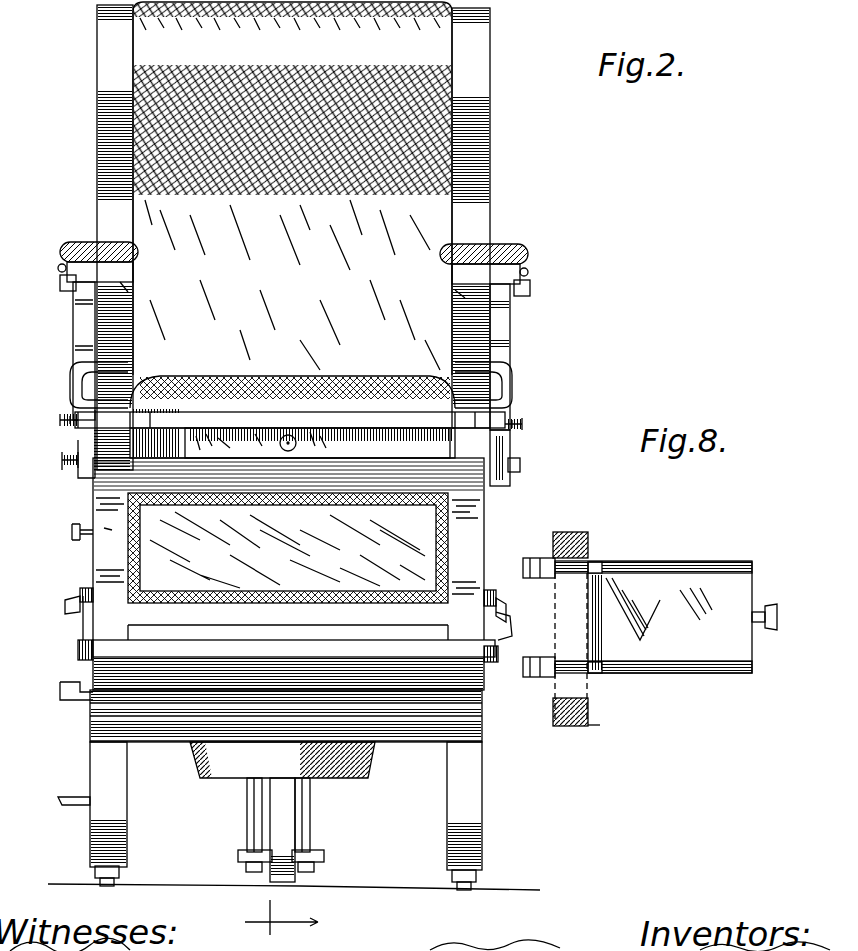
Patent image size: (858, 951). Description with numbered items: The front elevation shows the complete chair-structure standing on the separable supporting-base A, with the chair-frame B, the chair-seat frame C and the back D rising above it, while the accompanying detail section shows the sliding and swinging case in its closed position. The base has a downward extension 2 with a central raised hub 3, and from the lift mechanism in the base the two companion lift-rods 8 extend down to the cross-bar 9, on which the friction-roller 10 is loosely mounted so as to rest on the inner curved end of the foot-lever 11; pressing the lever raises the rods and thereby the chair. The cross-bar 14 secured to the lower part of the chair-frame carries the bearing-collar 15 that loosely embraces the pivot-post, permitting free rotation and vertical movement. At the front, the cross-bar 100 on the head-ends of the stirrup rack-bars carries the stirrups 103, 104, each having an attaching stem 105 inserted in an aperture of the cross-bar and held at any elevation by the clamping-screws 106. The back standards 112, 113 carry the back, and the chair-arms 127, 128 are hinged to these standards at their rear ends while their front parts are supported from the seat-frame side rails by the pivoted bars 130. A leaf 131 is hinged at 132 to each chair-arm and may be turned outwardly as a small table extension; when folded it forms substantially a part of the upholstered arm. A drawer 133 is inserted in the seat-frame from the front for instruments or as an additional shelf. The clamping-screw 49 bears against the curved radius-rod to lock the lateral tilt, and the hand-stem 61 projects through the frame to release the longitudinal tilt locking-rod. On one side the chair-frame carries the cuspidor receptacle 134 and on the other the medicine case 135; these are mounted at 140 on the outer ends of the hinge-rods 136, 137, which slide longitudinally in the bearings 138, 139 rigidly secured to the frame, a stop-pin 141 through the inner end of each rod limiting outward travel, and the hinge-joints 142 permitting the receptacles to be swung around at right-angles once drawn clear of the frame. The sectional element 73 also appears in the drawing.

In FIG. 2, the back D is at (292, 188).
In FIG. 2, the back standard 112 is at (95, 148).
In FIG. 2, the back standard 113 is at (500, 152).
In FIG. 2, the leaf 131 is at (85, 268).
In FIG. 2, the hinge 132 is at (58, 270).
In FIG. 2, the chair-arm 127 is at (125, 288).
In FIG. 2, the chair-arm 128 is at (462, 294).
In FIG. 2, the bar 130 is at (510, 330).
In FIG. 2, the stirrup 103 is at (80, 372).
In FIG. 2, the stirrup 104 is at (495, 375).
In FIG. 2, the cross-bar 100 is at (125, 418).
In FIG. 2, the clamping-screw 106 is at (58, 420).
In FIG. 2, the attaching stem 105 is at (510, 452).
In FIG. 2, the clamping-screw 49 is at (60, 462).
In FIG. 2, the chair-seat frame C is at (292, 433).
In FIG. 2, the drawer 133 is at (317, 443).
In FIG. 2, the frame 73 is at (95, 322).
In FIG. 2, the bearing-collar 15 is at (109, 523).
In FIG. 2, the hand-stem 61 is at (70, 532).
In FIG. 2, the hinge-rod 136 is at (78, 592).
In FIG. 8, the hinge-rod 136 is at (726, 550).
In FIG. 2, the cuspidor receptacle 134 is at (92, 628).
In FIG. 2, the hinge-rod 137 is at (76, 650).
In FIG. 8, the hinge-rod 137 is at (718, 665).
In FIG. 2, the medicine case 135 is at (525, 630).
In FIG. 8, the medicine case 135 is at (653, 642).
In FIG. 2, the cross-bar 14 is at (286, 716).
In FIG. 2, the supporting-base A is at (294, 800).
In FIG. 2, the downward extension 2 is at (282, 760).
In FIG. 2, the lift-rod 8 is at (246, 798).
In FIG. 2, the foot-lever 11 is at (262, 900).
In FIG. 2, the friction-roller 10 is at (280, 852).
In FIG. 2, the cross-bar 9 is at (324, 860).
In FIG. 2, the central raised hub 3 is at (281, 925).
In FIG. 8, the bearing 138 is at (560, 540).
In FIG. 8, the bearing 139 is at (548, 690).
In FIG. 8, the stop-pin 141 is at (532, 560).
In FIG. 8, the hinge-joint 142 is at (595, 562).
In FIG. 8, the receptacle mounting 140 is at (762, 560).
In FIG. 8, the chair-frame B is at (597, 732).